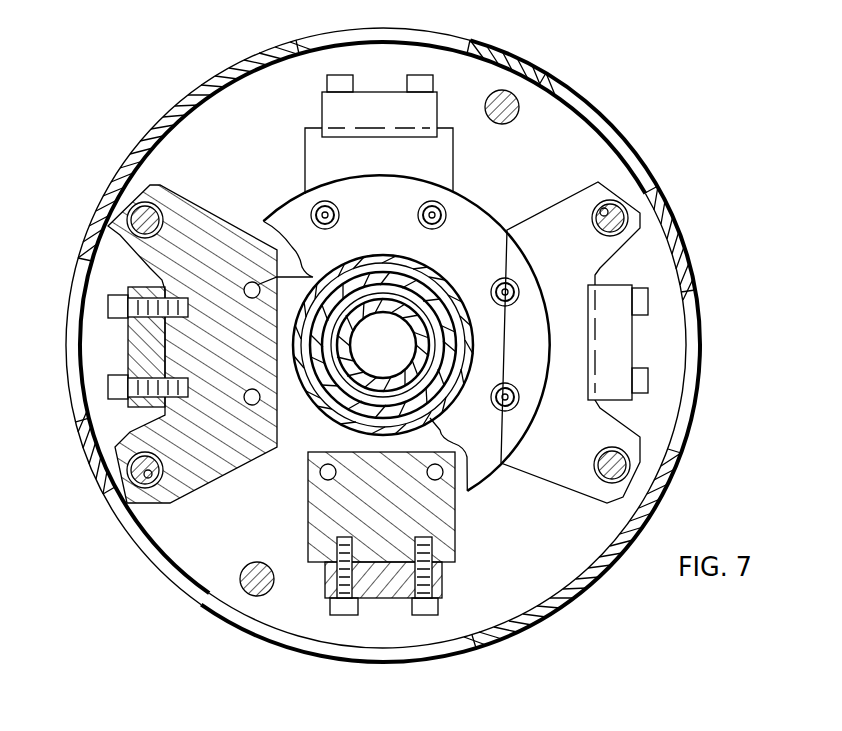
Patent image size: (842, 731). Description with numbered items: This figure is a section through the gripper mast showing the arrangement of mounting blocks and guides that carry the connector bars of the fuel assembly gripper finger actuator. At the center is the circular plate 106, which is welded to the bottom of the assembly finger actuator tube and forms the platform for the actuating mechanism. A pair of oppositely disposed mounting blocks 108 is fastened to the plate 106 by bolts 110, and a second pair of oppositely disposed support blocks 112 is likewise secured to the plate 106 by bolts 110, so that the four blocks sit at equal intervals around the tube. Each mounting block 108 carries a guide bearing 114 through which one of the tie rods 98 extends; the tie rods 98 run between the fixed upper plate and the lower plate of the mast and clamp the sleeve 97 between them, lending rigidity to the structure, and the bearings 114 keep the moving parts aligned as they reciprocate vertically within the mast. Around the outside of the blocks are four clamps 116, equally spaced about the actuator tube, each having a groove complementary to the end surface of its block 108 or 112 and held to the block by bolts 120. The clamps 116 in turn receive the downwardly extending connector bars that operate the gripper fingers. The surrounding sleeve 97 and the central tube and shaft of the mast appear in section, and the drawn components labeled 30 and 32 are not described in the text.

The sleeve 97 is at (198, 85).
The tie rods 98 is at (602, 211).
The bearing 30 is at (432, 295).
The shaft 32 is at (392, 303).
The circular plate 106 is at (519, 355).
The mounting blocks 108 is at (118, 464).
The bolts 110 is at (325, 226).
The support blocks 112 is at (453, 153).
The guide bearings 114 is at (136, 214).
The clamps 116 is at (380, 100).
The bolts 120 is at (327, 88).